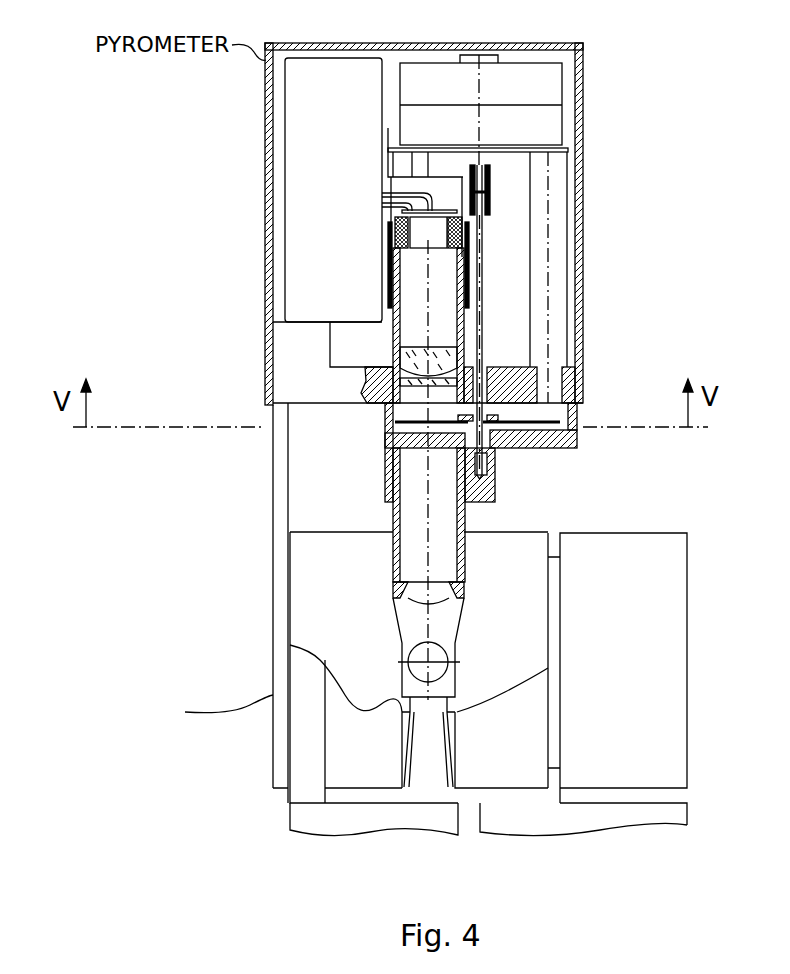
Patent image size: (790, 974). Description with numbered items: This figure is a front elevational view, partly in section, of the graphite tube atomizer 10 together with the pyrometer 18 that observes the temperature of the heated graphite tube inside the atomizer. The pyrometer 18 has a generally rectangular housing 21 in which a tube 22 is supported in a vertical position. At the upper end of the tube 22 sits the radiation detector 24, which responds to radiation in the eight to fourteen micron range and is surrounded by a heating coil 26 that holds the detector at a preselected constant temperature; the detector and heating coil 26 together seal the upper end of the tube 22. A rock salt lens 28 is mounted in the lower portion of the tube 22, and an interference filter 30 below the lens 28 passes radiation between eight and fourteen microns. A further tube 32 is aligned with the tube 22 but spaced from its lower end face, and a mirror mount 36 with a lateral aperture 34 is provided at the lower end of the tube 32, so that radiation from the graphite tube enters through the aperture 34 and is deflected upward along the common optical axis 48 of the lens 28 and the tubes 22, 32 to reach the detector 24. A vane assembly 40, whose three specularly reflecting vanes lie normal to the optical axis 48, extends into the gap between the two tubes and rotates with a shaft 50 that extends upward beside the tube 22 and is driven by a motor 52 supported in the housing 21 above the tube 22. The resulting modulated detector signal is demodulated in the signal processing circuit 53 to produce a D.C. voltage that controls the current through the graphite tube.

The graphite tube atomizer 10 is at (202, 602).
The pyrometer 18 is at (216, 123).
The housing 21 is at (578, 130).
The tube 22 is at (393, 290).
The radiation detector 24 is at (420, 225).
The heating coil 26 is at (469, 237).
The rock salt lens 28 is at (417, 358).
The interference filter 30 is at (372, 382).
The further tube 32 is at (393, 515).
The lateral aperture 34 is at (446, 672).
The mirror mount 36 is at (463, 617).
The vane assembly 40 is at (550, 421).
The optical axis 48 is at (425, 551).
The shaft 50 is at (483, 290).
The motor 52 is at (543, 83).
The signal processing circuit 53 is at (315, 175).